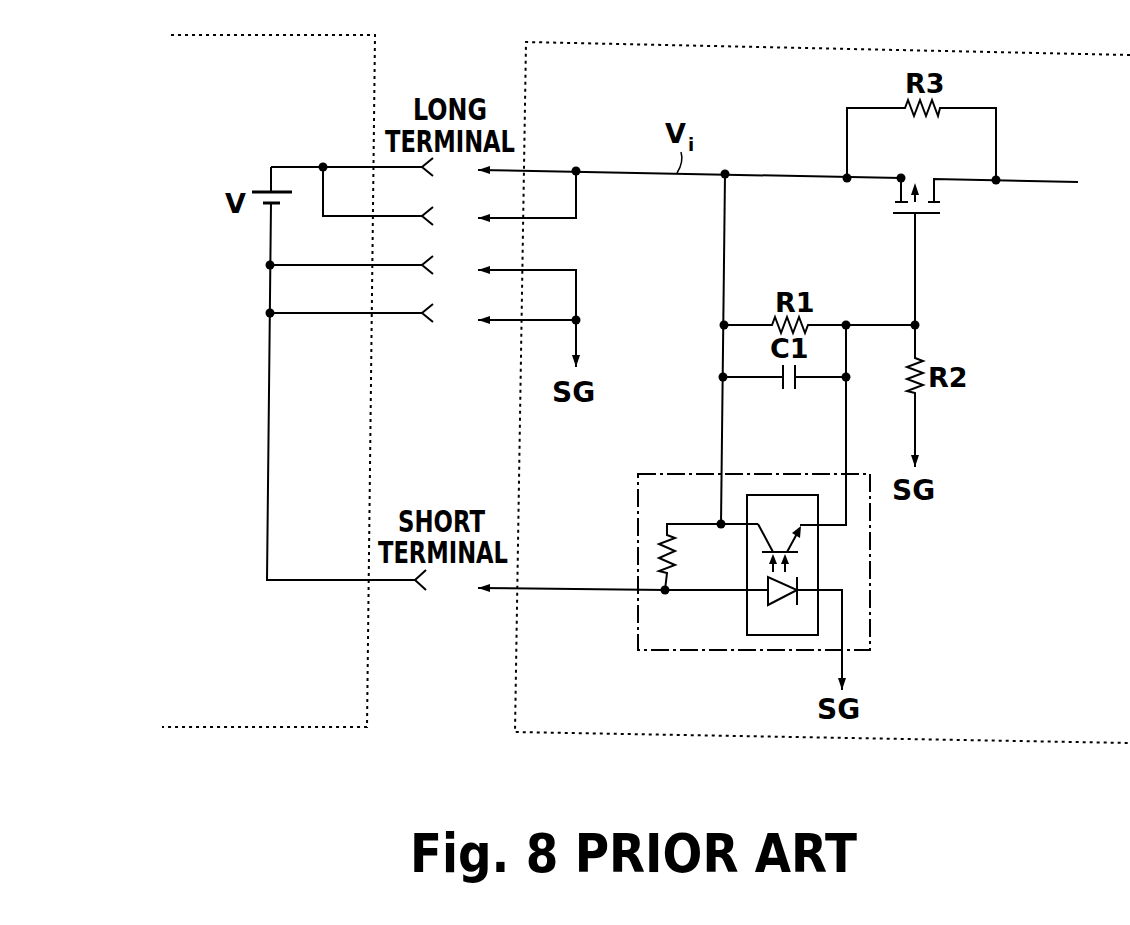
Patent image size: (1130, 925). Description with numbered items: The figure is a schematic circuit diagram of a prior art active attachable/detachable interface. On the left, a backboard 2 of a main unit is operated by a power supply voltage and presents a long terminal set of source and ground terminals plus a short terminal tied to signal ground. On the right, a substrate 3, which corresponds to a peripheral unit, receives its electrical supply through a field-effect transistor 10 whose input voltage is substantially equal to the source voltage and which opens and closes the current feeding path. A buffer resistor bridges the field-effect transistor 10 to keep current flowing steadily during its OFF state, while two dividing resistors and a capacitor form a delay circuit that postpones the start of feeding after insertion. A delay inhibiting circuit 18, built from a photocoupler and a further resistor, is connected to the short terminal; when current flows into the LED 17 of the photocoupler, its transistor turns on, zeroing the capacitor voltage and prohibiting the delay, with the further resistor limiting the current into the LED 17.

The backboard 2 is at (257, 727).
The substrate 3 is at (994, 743).
The field-effect transistor 10 is at (950, 212).
The LED 17 is at (783, 607).
The delay inhibiting circuit 18 is at (794, 599).